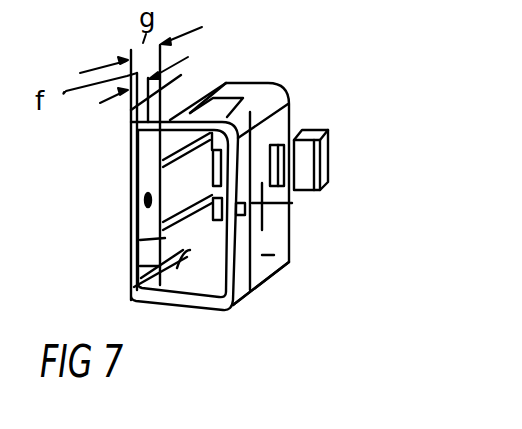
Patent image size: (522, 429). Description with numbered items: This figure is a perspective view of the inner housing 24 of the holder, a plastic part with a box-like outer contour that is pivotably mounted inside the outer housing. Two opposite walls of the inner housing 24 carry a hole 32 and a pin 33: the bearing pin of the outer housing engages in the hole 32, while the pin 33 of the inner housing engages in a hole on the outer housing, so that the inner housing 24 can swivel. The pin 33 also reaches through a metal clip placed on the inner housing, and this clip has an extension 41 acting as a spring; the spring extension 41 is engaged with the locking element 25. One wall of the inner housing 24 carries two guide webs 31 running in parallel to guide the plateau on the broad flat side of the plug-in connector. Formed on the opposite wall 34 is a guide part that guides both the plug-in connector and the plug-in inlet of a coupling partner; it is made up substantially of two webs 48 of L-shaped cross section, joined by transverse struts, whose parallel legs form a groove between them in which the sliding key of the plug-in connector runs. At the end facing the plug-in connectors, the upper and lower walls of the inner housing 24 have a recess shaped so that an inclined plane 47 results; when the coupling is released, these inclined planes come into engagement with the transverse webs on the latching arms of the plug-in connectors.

The inner housing 24 is at (185, 310).
The locking element 25 is at (322, 145).
The guide webs 31 is at (140, 240).
The hole 32 is at (146, 201).
The pin 33 is at (268, 234).
The wall 34 is at (265, 255).
The extension 41 is at (276, 190).
The inclined plane 47 is at (203, 82).
The webs 48 is at (140, 266).